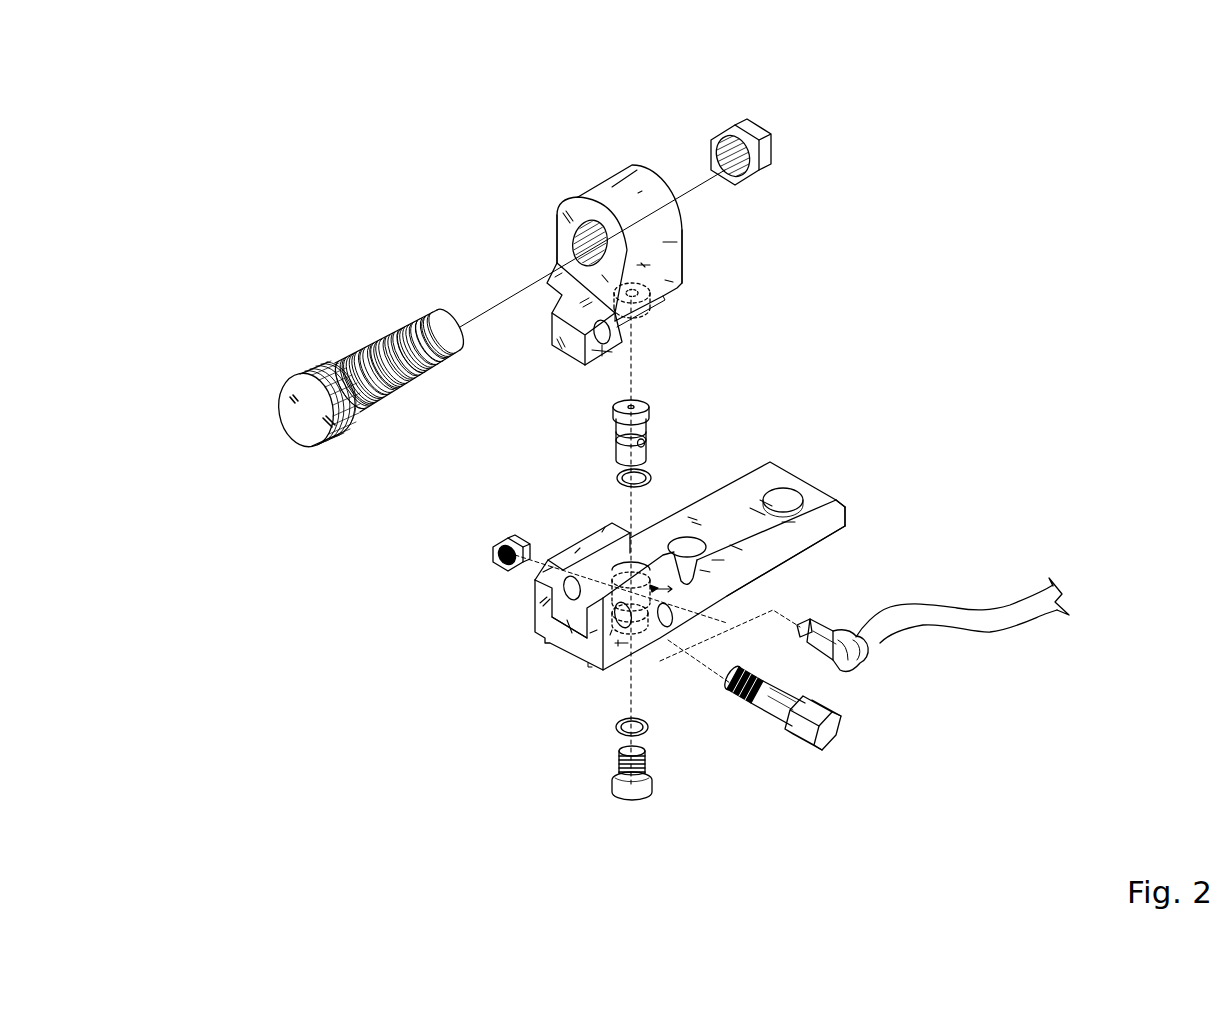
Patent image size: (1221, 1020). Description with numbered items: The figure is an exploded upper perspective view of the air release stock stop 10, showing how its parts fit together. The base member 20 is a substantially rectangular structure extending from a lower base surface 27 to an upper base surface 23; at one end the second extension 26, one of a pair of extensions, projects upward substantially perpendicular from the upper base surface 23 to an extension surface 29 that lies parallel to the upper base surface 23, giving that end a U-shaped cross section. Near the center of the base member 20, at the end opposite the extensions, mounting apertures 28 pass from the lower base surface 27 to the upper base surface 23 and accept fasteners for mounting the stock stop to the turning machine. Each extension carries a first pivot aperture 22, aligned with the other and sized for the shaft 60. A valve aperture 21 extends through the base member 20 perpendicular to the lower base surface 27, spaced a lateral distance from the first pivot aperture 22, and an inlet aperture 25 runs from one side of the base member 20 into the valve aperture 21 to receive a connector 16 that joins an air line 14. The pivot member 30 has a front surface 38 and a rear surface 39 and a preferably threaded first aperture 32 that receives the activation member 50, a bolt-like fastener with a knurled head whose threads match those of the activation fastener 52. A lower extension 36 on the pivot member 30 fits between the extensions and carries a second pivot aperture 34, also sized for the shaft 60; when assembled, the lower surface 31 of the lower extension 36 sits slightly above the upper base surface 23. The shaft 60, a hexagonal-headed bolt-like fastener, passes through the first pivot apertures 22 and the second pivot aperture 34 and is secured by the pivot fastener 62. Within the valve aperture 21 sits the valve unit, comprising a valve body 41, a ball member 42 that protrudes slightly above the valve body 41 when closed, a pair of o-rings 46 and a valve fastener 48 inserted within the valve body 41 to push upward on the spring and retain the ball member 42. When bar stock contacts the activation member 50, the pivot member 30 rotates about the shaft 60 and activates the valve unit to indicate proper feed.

The air release stock stop 10 is at (612, 100).
The air line 14 is at (1007, 620).
The connector 16 is at (855, 650).
The base member 20 is at (786, 461).
The valve aperture 21 is at (610, 575).
The first pivot aperture 22 is at (597, 606).
The upper base surface 23 is at (810, 503).
The inlet aperture 25 is at (700, 600).
The second extension 26 is at (547, 585).
The lower base surface 27 is at (820, 548).
The mounting aperture 28 is at (687, 537).
The extension surface 29 is at (663, 563).
The pivot member 30 is at (590, 172).
The lower surface 31 is at (683, 318).
The first aperture 32 is at (563, 233).
The second pivot aperture 34 is at (603, 353).
The lower extension 36 is at (567, 350).
The front surface 38 is at (563, 247).
The rear surface 39 is at (682, 252).
The valve body 41 is at (651, 419).
The ball member 42 is at (638, 406).
The o-rings 46 is at (651, 476).
The valve fastener 48 is at (647, 793).
The activation member 50 is at (290, 355).
The activation fastener 52 is at (747, 125).
The shaft 60 is at (828, 736).
The pivot fastener 62 is at (472, 559).